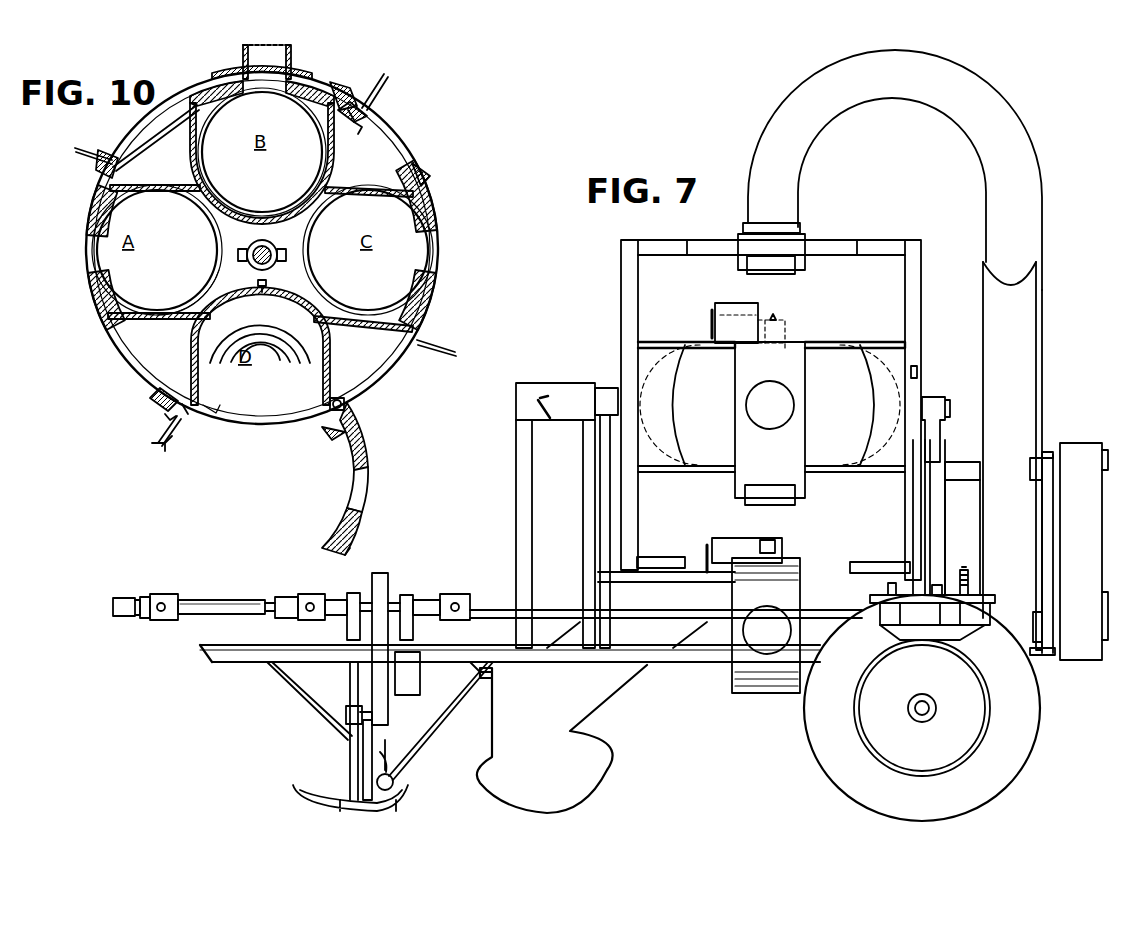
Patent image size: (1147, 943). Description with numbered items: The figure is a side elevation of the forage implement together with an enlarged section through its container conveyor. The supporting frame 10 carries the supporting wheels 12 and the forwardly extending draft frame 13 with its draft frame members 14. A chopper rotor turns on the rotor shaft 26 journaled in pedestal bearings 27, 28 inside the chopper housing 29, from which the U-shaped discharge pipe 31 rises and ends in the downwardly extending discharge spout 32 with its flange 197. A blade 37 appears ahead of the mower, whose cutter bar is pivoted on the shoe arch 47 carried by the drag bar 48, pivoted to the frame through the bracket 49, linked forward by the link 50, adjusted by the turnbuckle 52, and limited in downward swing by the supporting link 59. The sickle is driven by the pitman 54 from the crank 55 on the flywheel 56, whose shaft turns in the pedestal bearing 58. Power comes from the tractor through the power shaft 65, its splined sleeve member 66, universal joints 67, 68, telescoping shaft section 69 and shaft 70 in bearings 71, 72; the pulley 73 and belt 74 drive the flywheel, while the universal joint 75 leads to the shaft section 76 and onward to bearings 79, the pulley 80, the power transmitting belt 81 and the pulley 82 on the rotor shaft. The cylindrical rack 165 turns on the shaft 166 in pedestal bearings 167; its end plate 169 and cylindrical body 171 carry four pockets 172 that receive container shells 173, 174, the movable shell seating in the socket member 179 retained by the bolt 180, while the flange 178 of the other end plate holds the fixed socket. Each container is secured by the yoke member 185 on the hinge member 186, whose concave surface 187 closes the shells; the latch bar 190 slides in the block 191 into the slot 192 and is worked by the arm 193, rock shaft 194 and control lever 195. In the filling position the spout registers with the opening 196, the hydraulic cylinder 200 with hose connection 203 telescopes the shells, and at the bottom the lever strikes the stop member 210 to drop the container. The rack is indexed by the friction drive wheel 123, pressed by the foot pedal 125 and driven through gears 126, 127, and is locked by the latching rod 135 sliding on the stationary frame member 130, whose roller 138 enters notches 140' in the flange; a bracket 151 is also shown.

In FIG. 7, the supporting frame 10 is at (749, 152).
In FIG. 7, the supporting wheels 12 is at (1038, 724).
In FIG. 7, the draft frame 13 is at (221, 674).
In FIG. 7, the draft frame members 14 is at (258, 656).
In FIG. 7, the rotor shaft 26 is at (962, 466).
In FIG. 7, the pedestal bearing 27 is at (948, 492).
In FIG. 7, the pedestal bearing 28 is at (1048, 555).
In FIG. 7, the chopper housing 29 is at (1038, 380).
In FIG. 7, the discharge pipe 31 is at (997, 114).
In FIG. 10, the discharge spout 32 is at (291, 56).
In FIG. 7, the blade 37 is at (562, 739).
In FIG. 7, the shoe arch 47 is at (344, 792).
In FIG. 7, the drag bar 48 is at (420, 737).
In FIG. 7, the bracket 49 is at (482, 669).
In FIG. 7, the link 50 is at (312, 707).
In FIG. 7, the turnbuckle 52 is at (344, 720).
In FIG. 7, the pitman 54 is at (362, 742).
In FIG. 7, the crank 55 is at (352, 706).
In FIG. 7, the flywheel 56 is at (388, 718).
In FIG. 7, the pedestal bearing 58 is at (420, 682).
In FIG. 7, the supporting link 59 is at (395, 762).
In FIG. 7, the power shaft 65 is at (214, 592).
In FIG. 7, the splined sleeve member 66 is at (124, 596).
In FIG. 7, the universal joint 67 is at (160, 594).
In FIG. 7, the universal joint 68 is at (306, 594).
In FIG. 7, the telescoping shaft section 69 is at (228, 600).
In FIG. 7, the shaft 70 is at (333, 598).
In FIG. 7, the bearing 71 is at (352, 592).
In FIG. 7, the bearing 72 is at (412, 599).
In FIG. 7, the pulley 73 is at (392, 592).
In FIG. 7, the belt 74 is at (378, 574).
In FIG. 7, the universal joint 75 is at (458, 594).
In FIG. 7, the shaft section 76 is at (542, 608).
In FIG. 7, the bearings 79 is at (1048, 632).
In FIG. 7, the pulley 80 is at (1108, 608).
In FIG. 7, the power transmitting belt 81 is at (1100, 524).
In FIG. 7, the pulley 82 is at (1108, 458).
In FIG. 7, the friction drive wheel 123 is at (890, 590).
In FIG. 7, the foot pedal 125 is at (942, 585).
In FIG. 7, the gear 126 is at (970, 592).
In FIG. 7, the gear 127 is at (970, 576).
In FIG. 7, the stationary frame member 130 is at (951, 608).
In FIG. 7, the latching rod 135 is at (882, 619).
In FIG. 7, the roller 138 is at (908, 562).
In FIG. 7, the notches 140' is at (940, 368).
In FIG. 7, the bracket 151 is at (1056, 653).
In FIG. 10, the cylindrical rack 165 is at (387, 124).
In FIG. 10, the shaft 166 is at (268, 248).
In FIG. 7, the pedestal bearings 167 is at (603, 462).
In FIG. 10, the end plate 169 is at (286, 346).
In FIG. 10, the cylindrical body 171 is at (392, 153).
In FIG. 7, the cylindrical body 171 is at (863, 305).
In FIG. 10, the pockets 172 is at (196, 148).
In FIG. 7, the container shell 173 is at (828, 472).
In FIG. 10, the container shell 174 is at (210, 208).
In FIG. 7, the container shell 174 is at (700, 472).
In FIG. 7, the flange 178 is at (915, 314).
In FIG. 7, the socket member 179 is at (662, 420).
In FIG. 10, the bolt 180 is at (248, 243).
In FIG. 10, the yoke member 185 is at (425, 214).
In FIG. 7, the yoke member 185 is at (807, 245).
In FIG. 10, the hinge member 186 is at (346, 404).
In FIG. 7, the hinge member 186 is at (775, 272).
In FIG. 10, the concave surface 187 is at (166, 272).
In FIG. 10, the latch bar 190 is at (336, 92).
In FIG. 7, the latch bar 190 is at (788, 344).
In FIG. 10, the block 191 is at (348, 102).
In FIG. 7, the block 191 is at (718, 304).
In FIG. 10, the slot 192 is at (352, 534).
In FIG. 10, the arm 193 is at (360, 110).
In FIG. 10, the rock shaft 194 is at (366, 100).
In FIG. 7, the rock shaft 194 is at (735, 320).
In FIG. 10, the control lever 195 is at (387, 64).
In FIG. 7, the control lever 195 is at (710, 326).
In FIG. 10, the opening 196 is at (244, 92).
In FIG. 7, the opening 196 is at (768, 382).
In FIG. 10, the flange 197 is at (223, 76).
In FIG. 7, the hydraulic cylinder 200 is at (561, 383).
In FIG. 7, the hose connection 203 is at (548, 420).
In FIG. 10, the stop member 210 is at (165, 447).
In FIG. 7, the stop member 210 is at (728, 592).